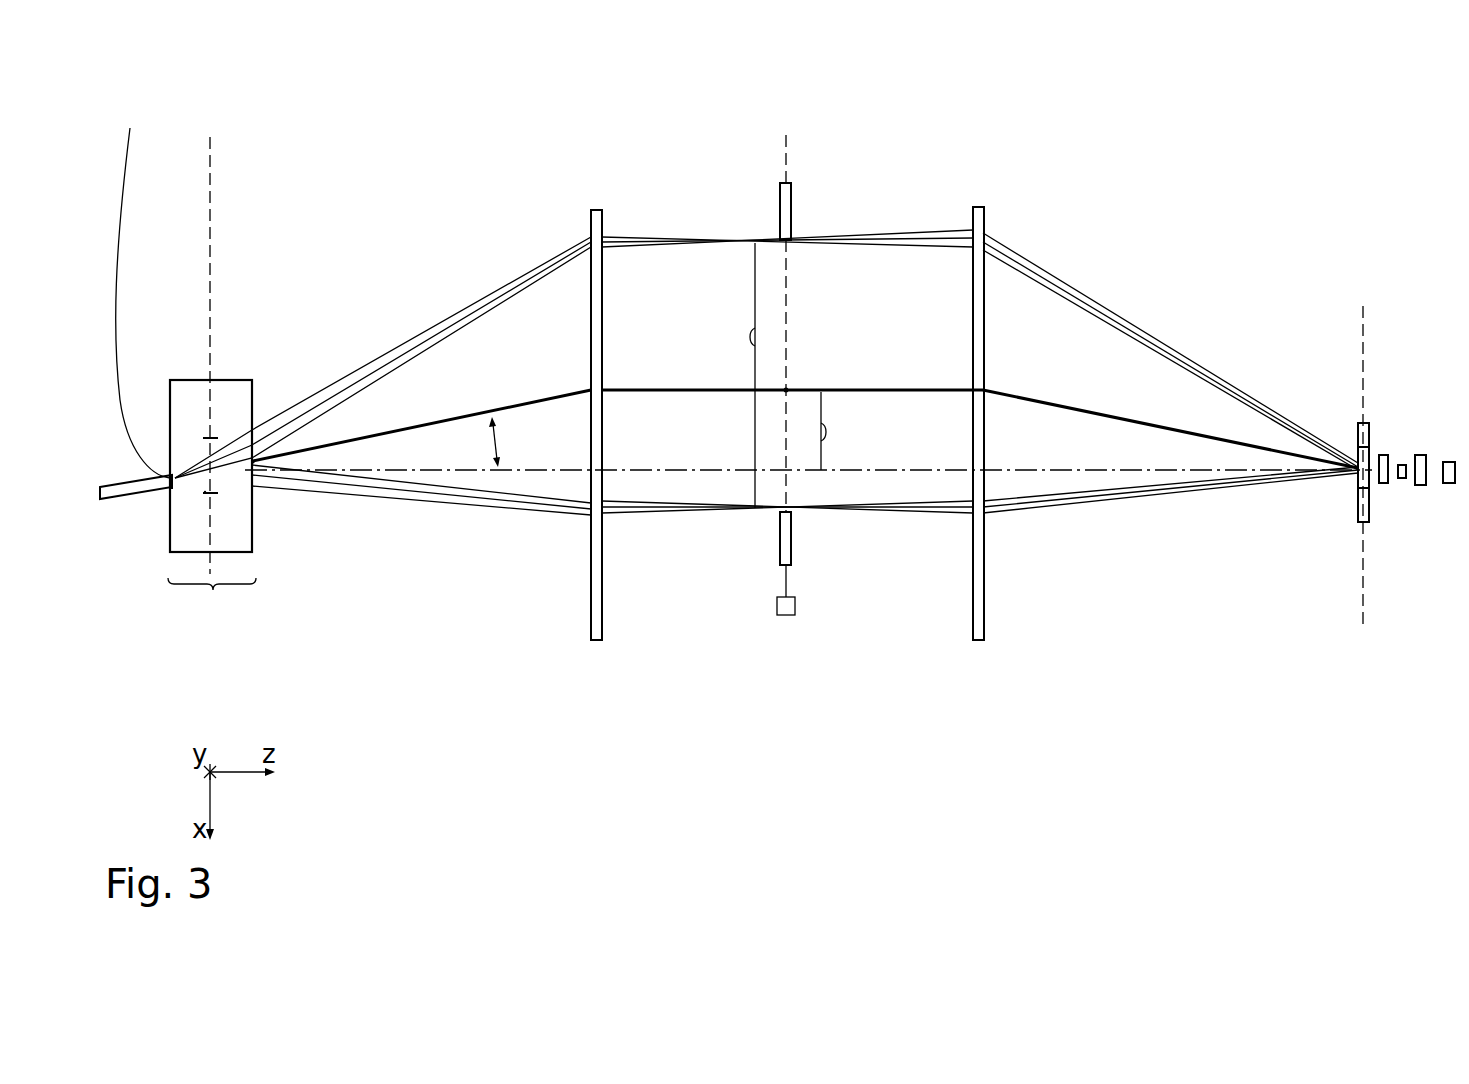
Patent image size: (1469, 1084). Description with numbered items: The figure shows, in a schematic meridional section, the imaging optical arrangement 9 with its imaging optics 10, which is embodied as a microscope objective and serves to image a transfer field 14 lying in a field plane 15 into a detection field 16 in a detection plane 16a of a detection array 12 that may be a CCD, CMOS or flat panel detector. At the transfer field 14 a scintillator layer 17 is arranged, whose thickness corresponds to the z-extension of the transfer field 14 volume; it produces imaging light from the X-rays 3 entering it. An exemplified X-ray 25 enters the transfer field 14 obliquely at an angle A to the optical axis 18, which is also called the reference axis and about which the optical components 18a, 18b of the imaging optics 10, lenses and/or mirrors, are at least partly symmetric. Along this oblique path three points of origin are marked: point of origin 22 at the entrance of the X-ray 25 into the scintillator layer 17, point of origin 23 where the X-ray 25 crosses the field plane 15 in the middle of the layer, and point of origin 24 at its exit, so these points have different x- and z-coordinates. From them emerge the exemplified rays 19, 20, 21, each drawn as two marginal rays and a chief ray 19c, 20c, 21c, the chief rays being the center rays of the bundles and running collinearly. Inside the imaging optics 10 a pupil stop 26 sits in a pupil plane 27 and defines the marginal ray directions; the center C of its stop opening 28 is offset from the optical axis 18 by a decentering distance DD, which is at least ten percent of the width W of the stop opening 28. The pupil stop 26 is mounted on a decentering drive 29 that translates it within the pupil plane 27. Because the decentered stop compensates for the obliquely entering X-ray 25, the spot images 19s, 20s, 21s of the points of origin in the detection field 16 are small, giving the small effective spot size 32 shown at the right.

The X-rays 3 is at (136, 606).
The X-ray 25 is at (132, 488).
The point of origin 23 is at (172, 484).
The scintillator layer 17 is at (213, 590).
The field plane 15 is at (210, 235).
The point of origin 22 is at (141, 288).
The transfer field 14 is at (205, 492).
The point of origin 24 is at (253, 462).
The optical axis 18 is at (450, 470).
The ray 19 is at (310, 396).
The ray 20 is at (372, 372).
The ray 21 is at (437, 347).
The chief ray 19c is at (805, 283).
The chief ray 20c is at (805, 283).
The chief ray 21c is at (535, 402).
The optical component 18a is at (596, 641).
The optical component 18b is at (979, 641).
The pupil plane 27 is at (784, 176).
The pupil stop 26 is at (776, 556).
The stop opening 28 is at (795, 247).
The decentering drive 29 is at (790, 615).
The imaging optics 10 is at (1066, 272).
The imaging optical arrangement 9 is at (1190, 207).
The detection array 12 is at (1356, 423).
The detection field 16 is at (1356, 513).
The detection plane 16a is at (1362, 562).
The spot image 19s is at (1421, 455).
The spot image 20s is at (1402, 480).
The spot image 21s is at (1384, 455).
The effective spot size 32 is at (1449, 484).
The center of the stop opening C is at (786, 390).
The width of the stop opening W is at (737, 375).
The decentering distance DD is at (850, 431).
The angle A is at (506, 442).